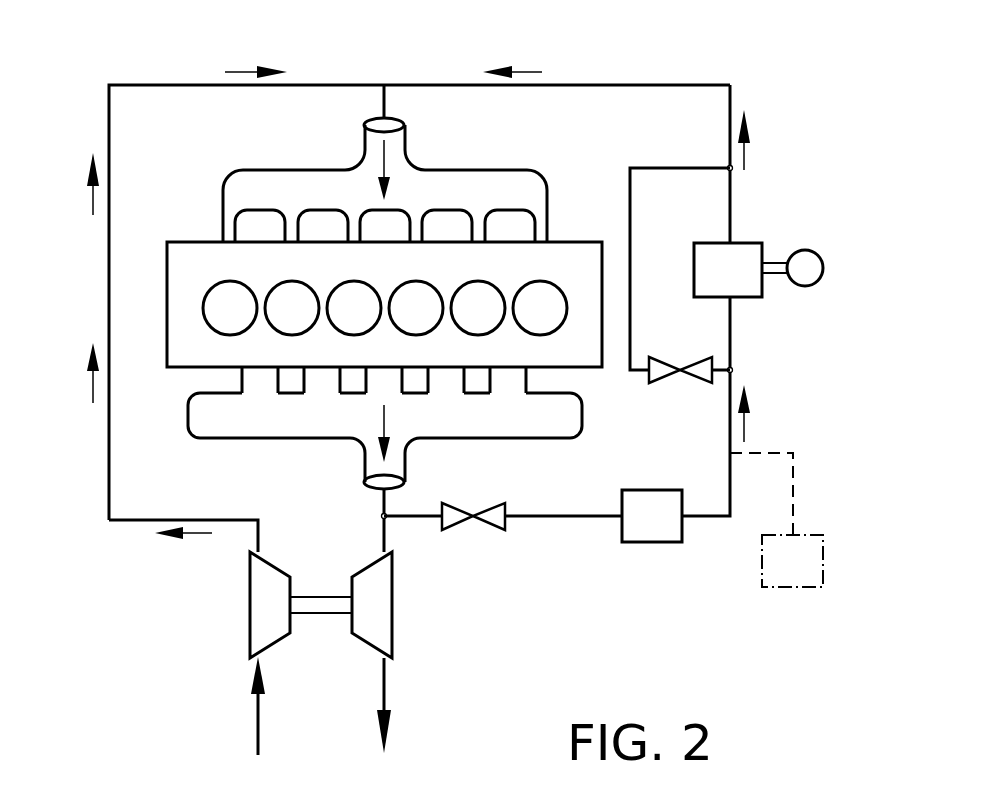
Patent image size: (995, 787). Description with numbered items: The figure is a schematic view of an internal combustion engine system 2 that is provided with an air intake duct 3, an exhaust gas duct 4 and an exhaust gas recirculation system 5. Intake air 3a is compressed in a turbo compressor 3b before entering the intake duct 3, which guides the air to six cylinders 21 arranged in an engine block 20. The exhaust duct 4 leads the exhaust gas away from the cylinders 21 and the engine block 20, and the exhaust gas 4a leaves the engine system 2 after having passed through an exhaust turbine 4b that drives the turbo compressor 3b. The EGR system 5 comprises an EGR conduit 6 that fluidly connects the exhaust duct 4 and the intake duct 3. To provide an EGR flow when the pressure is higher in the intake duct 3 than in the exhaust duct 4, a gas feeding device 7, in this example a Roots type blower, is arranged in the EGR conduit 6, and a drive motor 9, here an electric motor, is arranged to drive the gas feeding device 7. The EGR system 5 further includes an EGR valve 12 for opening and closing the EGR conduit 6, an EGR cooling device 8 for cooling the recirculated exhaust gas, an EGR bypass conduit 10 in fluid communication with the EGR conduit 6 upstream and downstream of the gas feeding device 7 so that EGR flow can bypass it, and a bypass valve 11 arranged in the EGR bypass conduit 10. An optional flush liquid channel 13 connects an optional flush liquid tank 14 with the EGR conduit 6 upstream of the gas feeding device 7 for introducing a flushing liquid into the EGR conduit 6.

The internal combustion engine system 2 is at (578, 55).
The air intake duct 3 is at (197, 85).
The intake air 3a is at (258, 712).
The turbo compressor 3b is at (250, 632).
The exhaust gas duct 4 is at (190, 423).
The exhaust gas 4a is at (384, 680).
The exhaust turbine 4b is at (392, 632).
The exhaust gas recirculation (EGR) system 5 is at (727, 592).
The EGR conduit 6 is at (732, 103).
The gas feeding device 7 is at (747, 242).
The EGR cooling device 8 is at (637, 542).
The drive motor 9 is at (827, 267).
The EGR bypass conduit 10 is at (683, 168).
The bypass valve 11 is at (665, 358).
The EGR valve 12 is at (485, 530).
The flush liquid channel 13 is at (793, 502).
The flush liquid tank 14 is at (823, 542).
The engine block 20 is at (193, 263).
The cylinders 21 is at (230, 307).